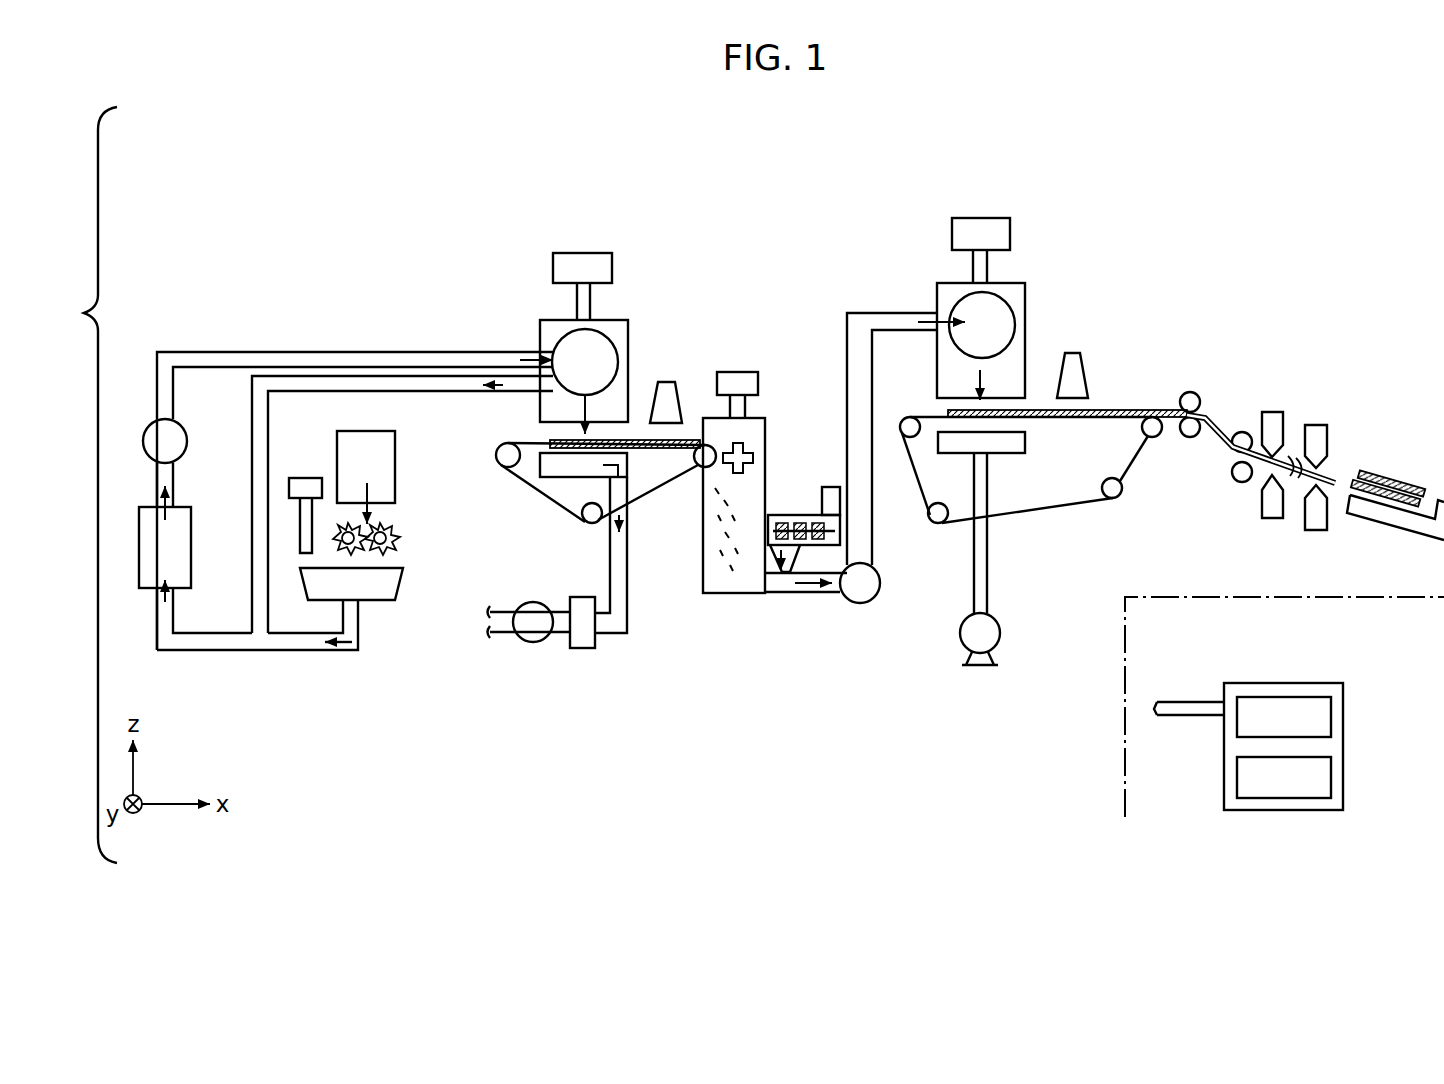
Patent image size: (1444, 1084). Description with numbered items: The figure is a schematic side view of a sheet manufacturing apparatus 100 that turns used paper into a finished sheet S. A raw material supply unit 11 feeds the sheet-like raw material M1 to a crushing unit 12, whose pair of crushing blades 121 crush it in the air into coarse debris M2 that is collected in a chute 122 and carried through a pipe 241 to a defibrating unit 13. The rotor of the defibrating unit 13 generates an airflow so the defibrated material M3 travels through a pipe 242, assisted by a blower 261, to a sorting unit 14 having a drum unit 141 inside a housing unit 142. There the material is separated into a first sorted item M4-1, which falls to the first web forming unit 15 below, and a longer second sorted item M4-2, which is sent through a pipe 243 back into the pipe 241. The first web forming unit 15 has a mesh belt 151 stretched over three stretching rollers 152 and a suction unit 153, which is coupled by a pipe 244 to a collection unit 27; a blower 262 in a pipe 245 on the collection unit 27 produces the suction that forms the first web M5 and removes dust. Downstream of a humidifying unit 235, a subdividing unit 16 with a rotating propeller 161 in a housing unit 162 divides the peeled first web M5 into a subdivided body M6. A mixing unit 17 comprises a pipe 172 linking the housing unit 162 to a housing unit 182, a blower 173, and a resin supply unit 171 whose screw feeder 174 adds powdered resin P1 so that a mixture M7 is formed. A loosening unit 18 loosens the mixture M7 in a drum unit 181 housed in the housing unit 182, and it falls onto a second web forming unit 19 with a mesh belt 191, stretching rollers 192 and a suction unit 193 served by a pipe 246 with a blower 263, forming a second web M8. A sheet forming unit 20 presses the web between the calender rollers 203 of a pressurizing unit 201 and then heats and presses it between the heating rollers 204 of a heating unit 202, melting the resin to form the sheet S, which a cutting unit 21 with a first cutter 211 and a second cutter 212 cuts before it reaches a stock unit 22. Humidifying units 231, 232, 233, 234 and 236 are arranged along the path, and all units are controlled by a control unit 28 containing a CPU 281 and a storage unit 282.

The sheet manufacturing apparatus 100 is at (1185, 182).
The raw material supply unit 11 is at (395, 458).
The crushing unit 12 is at (402, 541).
The crushing blades 121 is at (352, 552).
The chute 122 is at (405, 588).
The defibrating unit 13 is at (191, 546).
The sorting unit 14 is at (574, 319).
The drum unit 141 is at (612, 342).
The housing unit 142 is at (615, 320).
The first web forming unit 15 is at (600, 536).
The mesh belt 151 is at (648, 500).
The stretching rollers 152 is at (503, 467).
The suction unit 153 is at (627, 466).
The subdividing unit 16 is at (766, 522).
The propeller 161 is at (765, 446).
The housing unit 162 is at (718, 595).
The mixing unit 17 is at (872, 479).
The resin supply unit 171 is at (826, 487).
The pipe 172 is at (874, 565).
The blower 173 is at (870, 603).
The screw feeder 174 is at (781, 515).
The loosening unit 18 is at (1025, 284).
The drum unit 181 is at (1012, 312).
The housing unit 182 is at (1015, 283).
The second web forming unit 19 is at (1020, 521).
The mesh belt 191 is at (1035, 512).
The stretching roller 192 is at (902, 418).
The suction unit 193 is at (1025, 446).
The sheet forming unit 20 is at (1283, 438).
The pressurizing unit 201 is at (1190, 377).
The heating unit 202 is at (1205, 496).
The calender rollers 203 is at (1243, 355).
The heating rollers 204 is at (1235, 452).
The cutting unit 21 is at (1327, 427).
The first cutter 211 is at (1290, 405).
The second cutter 212 is at (1287, 358).
The stock unit 22 is at (1408, 520).
The humidifying unit 231 is at (308, 478).
The humidifying unit 232 is at (582, 253).
The humidifying unit 233 is at (737, 372).
The humidifying unit 234 is at (980, 218).
The humidifying unit 235 is at (672, 382).
The humidifying unit 236 is at (1085, 365).
The pipe 241 is at (294, 650).
The pipe 242 is at (186, 352).
The pipe 243 is at (378, 376).
The pipe 244 is at (627, 609).
The pipe 245 is at (560, 636).
The pipe 246 is at (990, 593).
The blower 261 is at (148, 428).
The blower 262 is at (527, 642).
The blower 263 is at (1001, 636).
The collection unit 27 is at (590, 648).
The control unit 28 is at (1284, 707).
The central processing unit (CPU) 281 is at (1331, 712).
The storage unit 282 is at (1331, 774).
The raw material M1 is at (380, 497).
The coarse debris M2 is at (172, 602).
The defibrated material M3 is at (172, 500).
The first sorted item M4-1 is at (578, 415).
The second sorted item M4-2 is at (500, 376).
The first web M5 is at (712, 425).
The subdivided body M6 is at (742, 498).
The mixture M7 is at (808, 590).
The second web M8 is at (1045, 410).
The resin P1 is at (790, 553).
The sheet S is at (1258, 458).